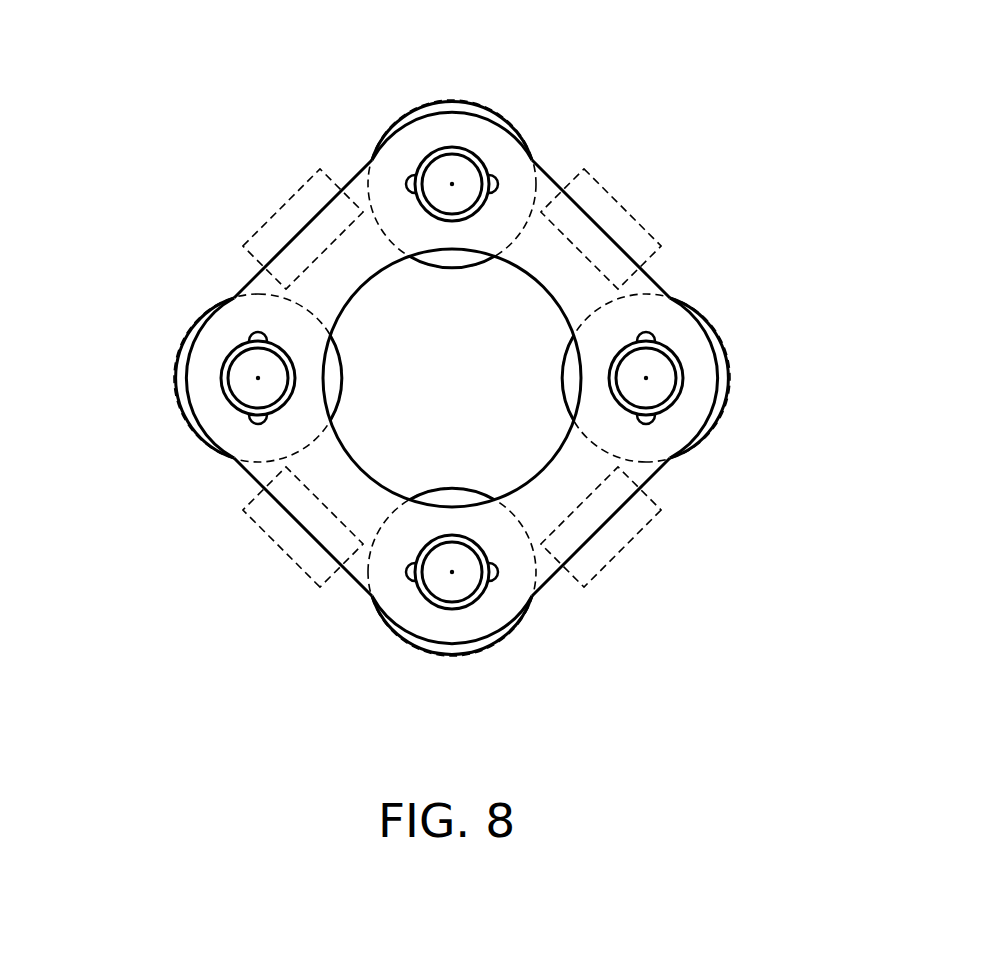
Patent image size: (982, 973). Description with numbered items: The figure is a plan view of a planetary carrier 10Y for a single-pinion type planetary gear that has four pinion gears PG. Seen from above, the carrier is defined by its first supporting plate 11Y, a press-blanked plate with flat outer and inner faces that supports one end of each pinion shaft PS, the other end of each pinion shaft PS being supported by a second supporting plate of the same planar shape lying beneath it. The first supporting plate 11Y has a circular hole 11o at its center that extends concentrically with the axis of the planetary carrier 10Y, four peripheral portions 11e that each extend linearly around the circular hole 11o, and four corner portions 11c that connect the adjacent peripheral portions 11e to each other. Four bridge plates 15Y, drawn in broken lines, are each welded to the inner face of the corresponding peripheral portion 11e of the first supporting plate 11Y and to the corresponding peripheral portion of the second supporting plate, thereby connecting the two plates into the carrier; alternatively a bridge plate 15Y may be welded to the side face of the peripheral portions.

The planetary carrier 10Y is at (614, 135).
The first supporting plate 11Y is at (242, 287).
The circular hole 11o is at (472, 390).
The corner portion 11c is at (497, 157).
The peripheral portion 11e is at (322, 232).
The pinion gear PG is at (452, 100).
The pinion shaft PS is at (440, 172).
The bridge plate 15Y is at (329, 229).